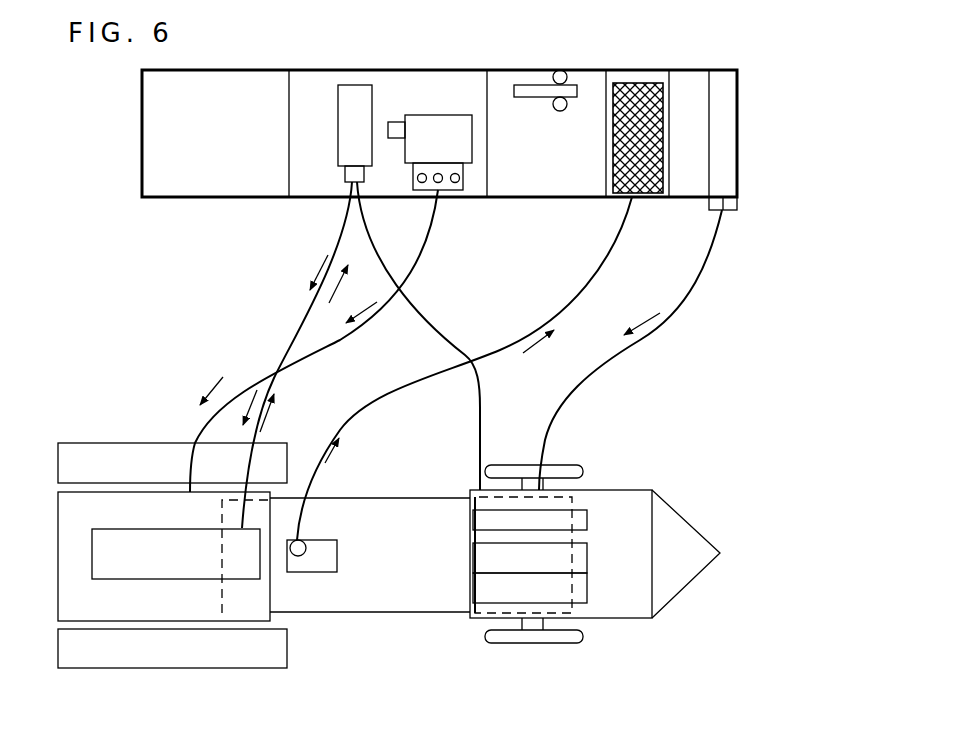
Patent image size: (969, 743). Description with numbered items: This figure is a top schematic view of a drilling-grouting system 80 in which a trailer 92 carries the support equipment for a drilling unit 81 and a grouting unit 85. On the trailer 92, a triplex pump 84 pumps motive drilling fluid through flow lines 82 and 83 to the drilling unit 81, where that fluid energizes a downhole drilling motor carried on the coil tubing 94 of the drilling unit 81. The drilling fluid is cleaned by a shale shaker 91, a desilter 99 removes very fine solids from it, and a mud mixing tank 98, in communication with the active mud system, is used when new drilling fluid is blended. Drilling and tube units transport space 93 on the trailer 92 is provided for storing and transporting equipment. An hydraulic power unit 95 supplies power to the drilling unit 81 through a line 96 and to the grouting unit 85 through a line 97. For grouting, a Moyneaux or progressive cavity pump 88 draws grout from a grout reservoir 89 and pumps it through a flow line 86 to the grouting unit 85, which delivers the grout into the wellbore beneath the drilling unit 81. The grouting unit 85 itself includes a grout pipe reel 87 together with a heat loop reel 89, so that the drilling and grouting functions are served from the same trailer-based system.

The drilling-grouting system 80 is at (650, 362).
The drilling unit 81 is at (58, 648).
The flow line 82 is at (293, 361).
The flow line 83 is at (590, 283).
The triplex pump 84 is at (437, 115).
The grouting unit 85 is at (470, 557).
The flow line 86 is at (697, 290).
The grout pipe reel 87 is at (588, 512).
The Moyneaux (progressive cavity) pump 88 is at (730, 212).
The grout reservoir 89 is at (728, 157).
The shale shaker 91 is at (645, 72).
The trailer 92 is at (142, 97).
The drilling and tube units transport space 93 is at (163, 160).
The coil tubing 94 is at (103, 548).
The hydraulic power unit 95 is at (350, 107).
The line 96 is at (305, 318).
The line 97 is at (483, 405).
The mud mixing tank 98 is at (697, 180).
The desilter 99 is at (573, 72).